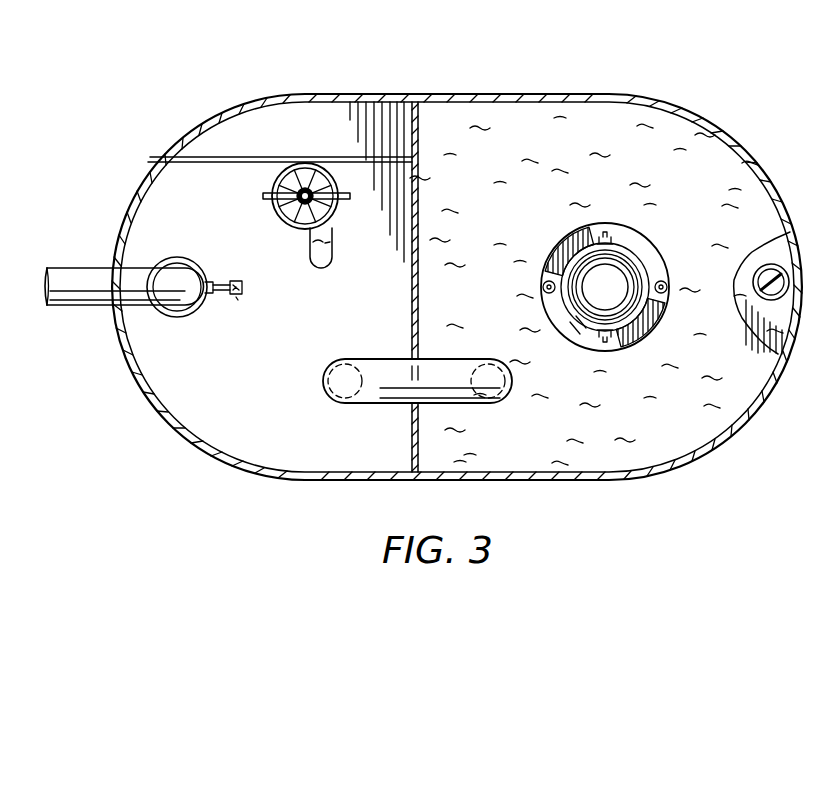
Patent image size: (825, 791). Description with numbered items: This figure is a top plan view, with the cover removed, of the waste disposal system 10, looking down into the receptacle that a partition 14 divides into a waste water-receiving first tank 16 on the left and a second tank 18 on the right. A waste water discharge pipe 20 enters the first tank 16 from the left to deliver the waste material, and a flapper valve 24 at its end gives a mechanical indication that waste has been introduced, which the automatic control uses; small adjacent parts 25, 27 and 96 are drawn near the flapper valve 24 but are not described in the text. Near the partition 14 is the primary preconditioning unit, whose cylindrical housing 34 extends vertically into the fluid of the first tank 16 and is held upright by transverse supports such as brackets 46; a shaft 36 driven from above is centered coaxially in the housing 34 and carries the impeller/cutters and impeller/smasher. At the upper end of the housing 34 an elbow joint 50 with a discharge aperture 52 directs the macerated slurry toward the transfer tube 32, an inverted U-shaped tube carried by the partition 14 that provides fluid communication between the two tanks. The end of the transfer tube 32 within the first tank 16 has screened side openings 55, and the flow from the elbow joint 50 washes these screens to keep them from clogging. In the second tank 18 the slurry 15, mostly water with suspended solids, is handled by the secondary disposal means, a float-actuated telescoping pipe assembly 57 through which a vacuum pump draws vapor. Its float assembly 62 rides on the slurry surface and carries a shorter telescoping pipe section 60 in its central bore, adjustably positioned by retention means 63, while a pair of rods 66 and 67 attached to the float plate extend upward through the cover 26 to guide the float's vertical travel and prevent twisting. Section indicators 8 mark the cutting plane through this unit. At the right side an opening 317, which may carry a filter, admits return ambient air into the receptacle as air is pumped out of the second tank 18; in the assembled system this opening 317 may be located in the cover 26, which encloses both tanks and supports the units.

The waste disposal system 10 is at (178, 91).
The first tank 16 is at (331, 126).
The second tank 18 is at (616, 126).
The slurry 15 is at (700, 432).
The partition 14 is at (419, 285).
The brackets 46 is at (243, 157).
The cylindrical housing 34 is at (330, 213).
The shaft 36 is at (313, 192).
The elbow joint 50 is at (333, 241).
The discharge aperture 52 is at (321, 268).
The waste water discharge pipe 20 is at (77, 270).
The flapper valve 24 is at (178, 258).
The stem 25 is at (222, 283).
The connector 27 is at (243, 283).
The connector end 96 is at (237, 300).
The transfer tube 32 is at (460, 360).
The openings 55 is at (346, 359).
The float assembly 62 is at (601, 226).
The telescoping pipe section 60 is at (636, 300).
The retention means 63 is at (575, 320).
The rod 66 is at (542, 288).
The rod 67 is at (668, 290).
The float-actuated telescoping pipe assembly 57 is at (606, 363).
The section line 8- 8 is at (526, 283).
The cover 26 is at (760, 253).
The opening 317 is at (784, 298).